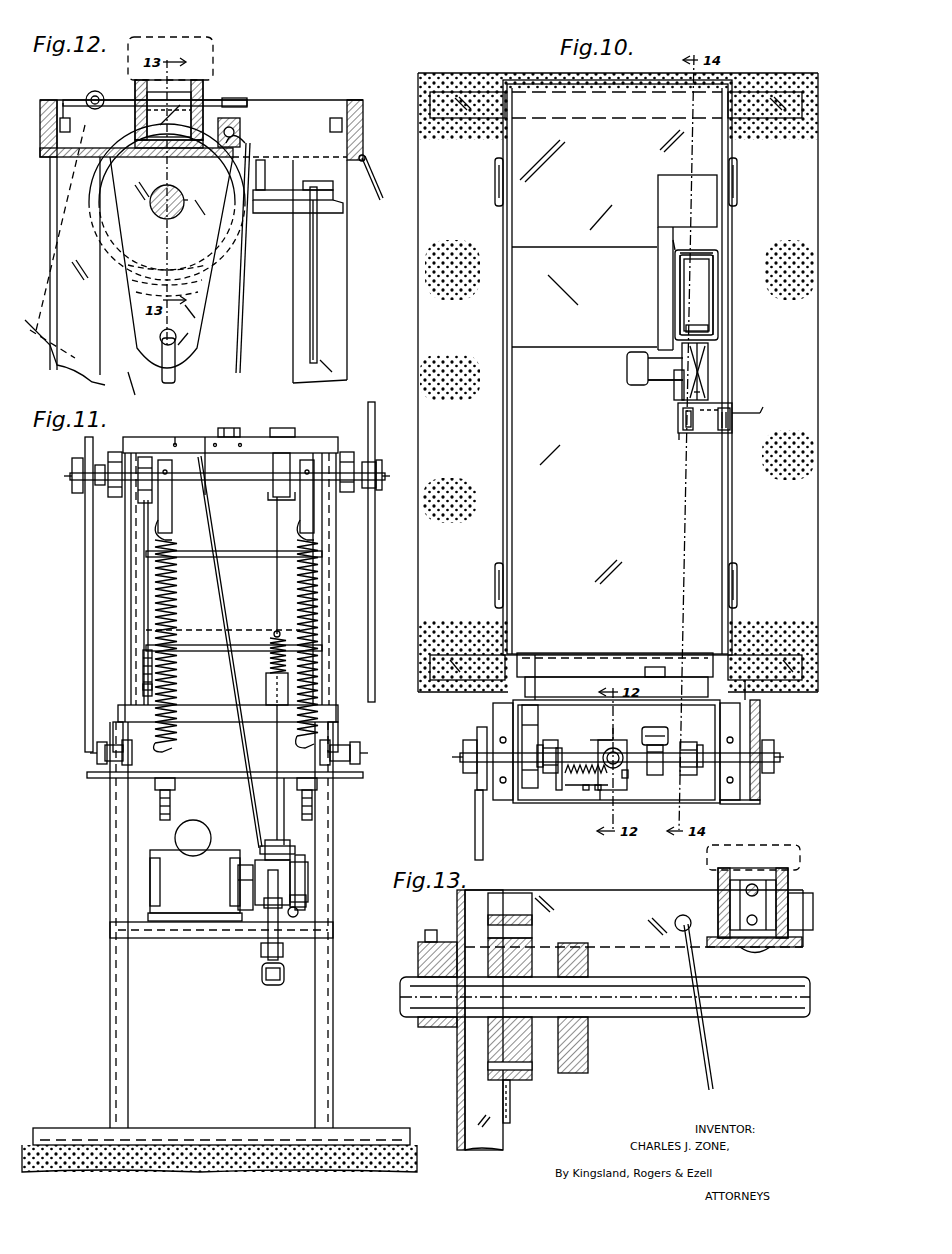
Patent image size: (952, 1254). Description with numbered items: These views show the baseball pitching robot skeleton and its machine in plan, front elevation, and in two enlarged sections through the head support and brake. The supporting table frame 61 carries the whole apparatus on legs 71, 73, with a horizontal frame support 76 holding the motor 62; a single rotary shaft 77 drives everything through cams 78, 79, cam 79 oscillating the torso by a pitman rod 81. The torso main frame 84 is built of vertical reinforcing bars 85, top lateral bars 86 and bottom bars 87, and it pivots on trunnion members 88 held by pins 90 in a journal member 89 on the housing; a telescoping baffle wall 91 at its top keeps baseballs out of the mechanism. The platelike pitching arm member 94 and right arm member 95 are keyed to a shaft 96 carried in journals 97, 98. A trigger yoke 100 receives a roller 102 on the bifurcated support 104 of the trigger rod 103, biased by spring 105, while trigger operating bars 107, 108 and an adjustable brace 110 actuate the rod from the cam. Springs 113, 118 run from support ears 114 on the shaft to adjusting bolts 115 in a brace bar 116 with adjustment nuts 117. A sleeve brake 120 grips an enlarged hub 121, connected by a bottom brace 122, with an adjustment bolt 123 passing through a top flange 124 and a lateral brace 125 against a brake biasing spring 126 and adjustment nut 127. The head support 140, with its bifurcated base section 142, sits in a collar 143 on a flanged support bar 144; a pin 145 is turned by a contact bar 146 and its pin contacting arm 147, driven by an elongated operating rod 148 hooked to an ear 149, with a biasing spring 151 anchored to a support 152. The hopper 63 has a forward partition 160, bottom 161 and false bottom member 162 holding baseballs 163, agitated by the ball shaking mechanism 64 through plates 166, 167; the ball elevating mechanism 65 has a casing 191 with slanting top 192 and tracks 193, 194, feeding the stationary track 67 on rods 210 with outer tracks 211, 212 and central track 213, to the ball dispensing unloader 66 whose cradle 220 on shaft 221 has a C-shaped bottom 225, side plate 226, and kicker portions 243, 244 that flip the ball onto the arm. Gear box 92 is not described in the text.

In FIG. 11, the supporting table frame 61 is at (108, 1030).
In FIG. 11, the motor 62 is at (165, 880).
In FIG. 10, the hopper 63 is at (515, 480).
In FIG. 10, the ball shaking mechanism 64 is at (652, 324).
In FIG. 10, the ball elevating mechanism 65 is at (712, 280).
In FIG. 10, the ball dispensing unloader 66 is at (690, 438).
In FIG. 10, the stationary ball conveying track 67 is at (670, 388).
In FIG. 11, the supporting leg 71 is at (320, 1068).
In FIG. 11, the supporting leg 73 is at (110, 1078).
In FIG. 11, the horizontal frame support 76 is at (135, 940).
In FIG. 11, the rotary shaft 77 is at (308, 882).
In FIG. 11, the cam 78 is at (265, 912).
In FIG. 11, the cam 79 is at (296, 916).
In FIG. 11, the pitman rod 81 is at (306, 903).
In FIG. 12, the main frame 84 is at (352, 98).
In FIG. 13, the main frame 84 is at (460, 1042).
In FIG. 12, the vertically extending reinforcing bar 85 is at (82, 368).
In FIG. 11, the vertically extending reinforcing bar 85 is at (126, 540).
In FIG. 13, the vertically extending reinforcing bar 85 is at (480, 1096).
In FIG. 12, the laterally extending reinforcing bar 86 is at (44, 100).
In FIG. 11, the laterally extending reinforcing bar 86 is at (255, 437).
In FIG. 10, the laterally extending reinforcing bar 86 is at (520, 680).
In FIG. 13, the laterally extending reinforcing bar 86 is at (612, 898).
In FIG. 11, the reinforcing bar 87 is at (208, 720).
In FIG. 11, the trunnion member 88 is at (115, 730).
In FIG. 11, the journal member 89 is at (130, 767).
In FIG. 11, the pin 90 is at (96, 752).
In FIG. 12, the telescoping baffle wall 91 is at (378, 185).
In FIG. 11, the telescoping baffle wall 91 is at (195, 440).
In FIG. 10, the telescoping baffle wall 91 is at (580, 660).
In FIG. 11, the gear box 92 is at (305, 870).
In FIG. 11, the elongated platelike member 94 is at (368, 410).
In FIG. 10, the elongated platelike member 94 is at (762, 722).
In FIG. 12, the arm member 95 is at (137, 388).
In FIG. 11, the arm member 95 is at (85, 575).
In FIG. 10, the arm member 95 is at (475, 822).
In FIG. 12, the shaft 96 is at (160, 215).
In FIG. 11, the shaft 96 is at (72, 480).
In FIG. 10, the shaft 96 is at (462, 755).
In FIG. 13, the shaft 96 is at (785, 1017).
In FIG. 11, the journal 97 is at (348, 484).
In FIG. 10, the journal 97 is at (748, 690).
In FIG. 11, the journal 98 is at (112, 497).
In FIG. 10, the journal 98 is at (500, 735).
In FIG. 13, the journal 98 is at (435, 1027).
In FIG. 11, the trigger yoke 100 is at (283, 455).
In FIG. 10, the trigger yoke 100 is at (655, 776).
In FIG. 11, the roller 102 is at (283, 428).
In FIG. 10, the roller 102 is at (652, 667).
In FIG. 11, the trigger rod 103 is at (276, 535).
In FIG. 11, the bifurcated support 104 is at (268, 496).
In FIG. 10, the bifurcated support 104 is at (655, 727).
In FIG. 11, the biasing spring 105 is at (272, 655).
In FIG. 11, the trigger operating bar 107 is at (292, 845).
In FIG. 11, the trigger operating bar 108 is at (272, 986).
In FIG. 11, the adjustable brace 110 is at (262, 952).
In FIG. 11, the spring 113 is at (318, 602).
In FIG. 10, the spring 113 is at (690, 776).
In FIG. 12, the support ear 114 is at (188, 333).
In FIG. 11, the support ear 114 is at (172, 492).
In FIG. 10, the support ear 114 is at (540, 745).
In FIG. 13, the support ear 114 is at (590, 1042).
In FIG. 11, the adjusting bolt 115 is at (160, 808).
In FIG. 11, the brace bar 116 is at (205, 780).
In FIG. 10, the brace bar 116 is at (760, 802).
In FIG. 11, the adjustment nut 117 is at (155, 785).
In FIG. 12, the second spring 118 is at (176, 358).
In FIG. 11, the second spring 118 is at (155, 608).
In FIG. 10, the second spring 118 is at (552, 760).
In FIG. 12, the sleeve brake 120 is at (263, 165).
In FIG. 11, the sleeve brake 120 is at (148, 455).
In FIG. 10, the sleeve brake 120 is at (522, 784).
In FIG. 13, the sleeve brake 120 is at (533, 1072).
In FIG. 12, the enlarged hub 121 is at (218, 235).
In FIG. 13, the enlarged hub 121 is at (528, 940).
In FIG. 12, the bottom brace 122 is at (330, 215).
In FIG. 13, the bottom brace 122 is at (508, 900).
In FIG. 12, the adjustment bolt 123 is at (318, 338).
In FIG. 11, the adjustment bolt 123 is at (144, 583).
In FIG. 13, the adjustment bolt 123 is at (512, 1110).
In FIG. 12, the top flange 124 is at (283, 200).
In FIG. 10, the top flange 124 is at (528, 660).
In FIG. 11, the lateral brace 125 is at (247, 637).
In FIG. 11, the brake biasing spring 126 is at (143, 664).
In FIG. 11, the adjustment nut 127 is at (143, 688).
In FIG. 12, the pivotal head support 140 is at (200, 38).
In FIG. 13, the pivotal head support 140 is at (707, 853).
In FIG. 12, the bifurcated base section 142 is at (182, 105).
In FIG. 12, the collar 143 is at (200, 82).
In FIG. 11, the collar 143 is at (238, 430).
In FIG. 10, the collar 143 is at (620, 745).
In FIG. 13, the collar 143 is at (718, 874).
In FIG. 12, the flanged support bar 144 is at (98, 205).
In FIG. 10, the flanged support bar 144 is at (600, 800).
In FIG. 13, the flanged support bar 144 is at (712, 947).
In FIG. 12, the pin 145 is at (238, 98).
In FIG. 10, the pin 145 is at (628, 776).
In FIG. 13, the pin 145 is at (754, 884).
In FIG. 12, the contact bar 146 is at (235, 125).
In FIG. 10, the contact bar 146 is at (586, 774).
In FIG. 13, the contact bar 146 is at (676, 918).
In FIG. 13, the pin contacting arm 147 is at (796, 840).
In FIG. 12, the elongated operating rod 148 is at (244, 305).
In FIG. 11, the elongated operating rod 148 is at (212, 538).
In FIG. 10, the elongated operating rod 148 is at (596, 738).
In FIG. 13, the elongated operating rod 148 is at (705, 1063).
In FIG. 11, the ear 149 is at (238, 870).
In FIG. 12, the biasing spring 151 is at (100, 92).
In FIG. 10, the biasing spring 151 is at (605, 790).
In FIG. 12, the support 152 is at (68, 100).
In FIG. 11, the support 152 is at (175, 440).
In FIG. 10, the support 152 is at (560, 800).
In FIG. 10, the forward partition 160 is at (540, 537).
In FIG. 10, the bottom 161 is at (540, 298).
In FIG. 10, the false bottom member 162 is at (548, 228).
In FIG. 10, the baseballs 163 is at (732, 440).
In FIG. 10, the plate 166 is at (668, 357).
In FIG. 10, the plate 167 is at (710, 195).
In FIG. 10, the box-like casing 191 is at (708, 334).
In FIG. 10, the slanting top 192 is at (686, 275).
In FIG. 10, the ball confining track 193 is at (680, 296).
In FIG. 10, the ball confining track 194 is at (700, 254).
In FIG. 10, the vertically extending rod 210 is at (627, 377).
In FIG. 10, the outer parallel track 211 is at (675, 382).
In FIG. 10, the outer parallel track 212 is at (704, 375).
In FIG. 10, the central track 213 is at (706, 365).
In FIG. 10, the ball cradle 220 is at (676, 432).
In FIG. 11, the vertically extending shaft 221 is at (283, 808).
In FIG. 10, the C-shaped bottom 225 is at (732, 408).
In FIG. 10, the plate 226 is at (683, 416).
In FIG. 10, the ball contacting portion 243 is at (686, 426).
In FIG. 10, the robot arm contacting portion 244 is at (765, 410).